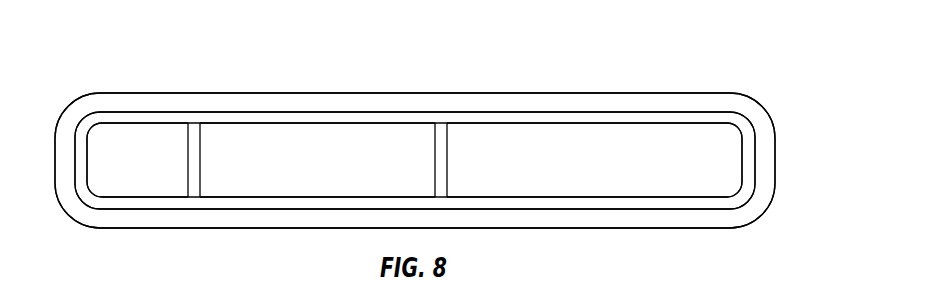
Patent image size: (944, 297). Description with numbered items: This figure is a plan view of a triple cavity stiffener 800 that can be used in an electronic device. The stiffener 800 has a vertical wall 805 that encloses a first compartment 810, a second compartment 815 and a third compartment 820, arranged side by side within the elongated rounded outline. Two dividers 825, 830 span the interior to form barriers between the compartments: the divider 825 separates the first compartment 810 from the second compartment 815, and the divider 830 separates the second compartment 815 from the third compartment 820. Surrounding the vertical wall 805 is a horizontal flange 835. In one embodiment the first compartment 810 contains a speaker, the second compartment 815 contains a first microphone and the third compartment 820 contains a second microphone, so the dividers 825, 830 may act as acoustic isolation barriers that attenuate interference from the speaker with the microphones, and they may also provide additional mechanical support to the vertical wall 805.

The stiffener 800 is at (783, 79).
The vertical wall 805 is at (747, 168).
The first compartment 810 is at (156, 171).
The second compartment 815 is at (335, 171).
The third compartment 820 is at (620, 171).
The divider 825 is at (197, 160).
The divider 830 is at (437, 160).
The horizontal flange 835 is at (762, 146).